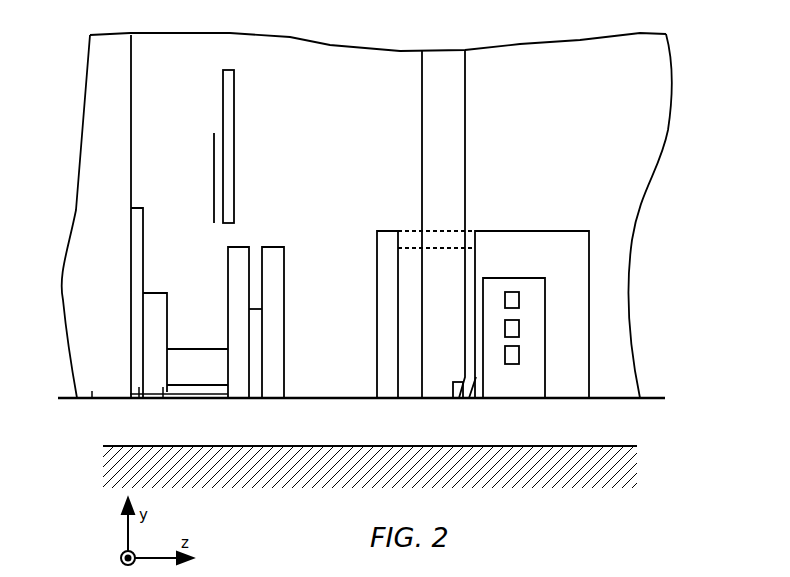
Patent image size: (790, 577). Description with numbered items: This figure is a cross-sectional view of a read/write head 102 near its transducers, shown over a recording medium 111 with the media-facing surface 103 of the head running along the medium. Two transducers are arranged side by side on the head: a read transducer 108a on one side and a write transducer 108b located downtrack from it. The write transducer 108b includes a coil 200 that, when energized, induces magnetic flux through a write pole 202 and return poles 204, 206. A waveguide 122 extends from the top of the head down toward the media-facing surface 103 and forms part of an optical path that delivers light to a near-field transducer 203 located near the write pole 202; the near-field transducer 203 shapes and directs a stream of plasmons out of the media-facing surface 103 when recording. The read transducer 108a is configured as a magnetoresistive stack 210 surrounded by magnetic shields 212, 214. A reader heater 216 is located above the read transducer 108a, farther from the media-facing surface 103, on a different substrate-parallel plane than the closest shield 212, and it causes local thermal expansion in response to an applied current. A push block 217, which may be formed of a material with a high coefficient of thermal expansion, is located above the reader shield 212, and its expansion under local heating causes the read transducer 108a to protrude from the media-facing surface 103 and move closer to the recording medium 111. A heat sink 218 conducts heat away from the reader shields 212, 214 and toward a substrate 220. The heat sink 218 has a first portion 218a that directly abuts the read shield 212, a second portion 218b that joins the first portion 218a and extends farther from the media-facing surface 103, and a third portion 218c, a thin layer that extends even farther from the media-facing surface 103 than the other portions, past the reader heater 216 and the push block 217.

The read/write head 102 is at (672, 75).
The media-facing surface 103 is at (662, 400).
The read transducer 108a is at (280, 184).
The write transducer 108b is at (542, 188).
The recording medium 111 is at (595, 481).
The waveguide 122 is at (442, 54).
The coil 200 is at (519, 331).
The write pole 202 is at (483, 380).
The near-field transducer 203 is at (456, 381).
The return pole 204 is at (580, 378).
The return pole 206 is at (380, 364).
The magnetoresistive stack 210 is at (257, 297).
The magnetic shield 212 is at (229, 262).
The magnetic shield 214 is at (272, 247).
The reader heater 216 is at (214, 143).
The push block 217 is at (223, 93).
The heat sink 218 is at (176, 297).
The first portion 218a is at (190, 352).
The second portion 218b is at (160, 400).
The third portion 218c is at (139, 400).
The substrate 220 is at (92, 401).